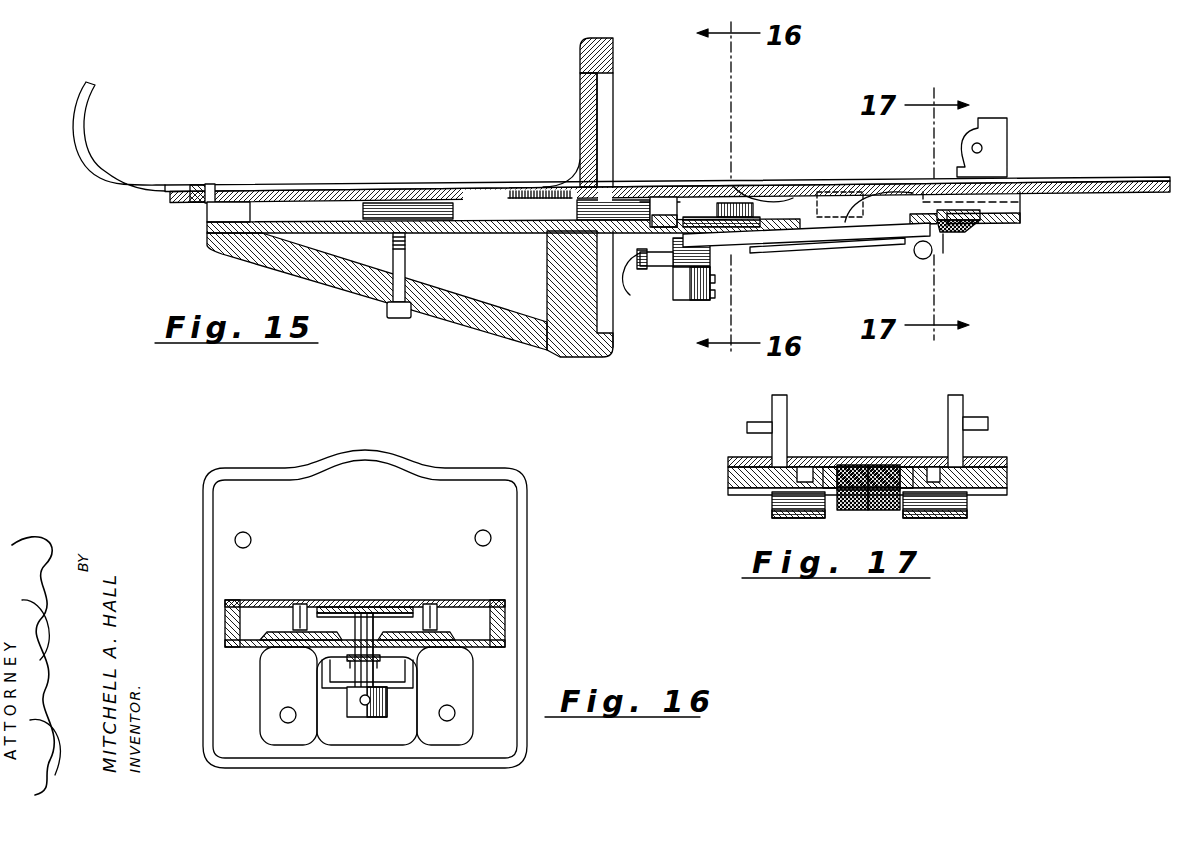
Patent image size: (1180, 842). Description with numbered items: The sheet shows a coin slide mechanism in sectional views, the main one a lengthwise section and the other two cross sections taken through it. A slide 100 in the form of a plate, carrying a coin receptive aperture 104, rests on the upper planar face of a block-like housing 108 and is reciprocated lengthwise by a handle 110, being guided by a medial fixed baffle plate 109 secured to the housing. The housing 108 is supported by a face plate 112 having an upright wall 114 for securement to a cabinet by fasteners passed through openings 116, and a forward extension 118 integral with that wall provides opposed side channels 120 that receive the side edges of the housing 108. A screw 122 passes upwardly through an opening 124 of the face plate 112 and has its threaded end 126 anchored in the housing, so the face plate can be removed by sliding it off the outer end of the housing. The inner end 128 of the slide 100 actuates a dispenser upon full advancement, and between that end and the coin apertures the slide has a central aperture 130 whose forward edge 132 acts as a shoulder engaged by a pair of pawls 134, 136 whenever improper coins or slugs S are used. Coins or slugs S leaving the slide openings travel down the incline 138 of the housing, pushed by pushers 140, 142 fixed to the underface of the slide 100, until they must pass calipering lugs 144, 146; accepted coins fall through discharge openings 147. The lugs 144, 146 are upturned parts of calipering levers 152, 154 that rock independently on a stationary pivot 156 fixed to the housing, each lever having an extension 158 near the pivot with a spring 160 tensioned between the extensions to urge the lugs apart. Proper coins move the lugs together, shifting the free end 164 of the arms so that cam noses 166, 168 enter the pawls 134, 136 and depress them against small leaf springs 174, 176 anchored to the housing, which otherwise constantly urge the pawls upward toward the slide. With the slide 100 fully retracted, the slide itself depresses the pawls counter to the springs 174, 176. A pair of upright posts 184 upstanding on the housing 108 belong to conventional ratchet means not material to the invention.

In FIG. 15, the slide 100 is at (306, 190).
In FIG. 16, the slide 100 is at (252, 600).
In FIG. 17, the slide 100 is at (1007, 459).
In FIG. 15, the coin receptive aperture 104 is at (468, 189).
In FIG. 15, the slug S is at (497, 189).
In FIG. 15, the housing 108 is at (527, 234).
In FIG. 16, the housing 108 is at (507, 625).
In FIG. 17, the housing 108 is at (1007, 474).
In FIG. 15, the baffle plate 109 is at (813, 192).
In FIG. 16, the baffle plate 109 is at (384, 606).
In FIG. 15, the handle 110 is at (91, 149).
In FIG. 15, the face plate 112 is at (519, 343).
In FIG. 16, the face plate 112 is at (528, 654).
In FIG. 15, the upright wall 114 is at (582, 99).
In FIG. 16, the upright wall 114 is at (508, 509).
In FIG. 16, the openings 116 is at (238, 538).
In FIG. 15, the forward extension 118 is at (362, 287).
In FIG. 15, the side channels 120 is at (250, 207).
In FIG. 16, the side channels 120 is at (227, 626).
In FIG. 15, the screw 122 is at (402, 281).
In FIG. 15, the opening 124 is at (386, 303).
In FIG. 15, the threaded end 126 is at (373, 234).
In FIG. 15, the inner end 128 is at (1166, 178).
In FIG. 15, the central aperture 130 is at (733, 186).
In FIG. 16, the central aperture 130 is at (340, 604).
In FIG. 15, the forward edge 132 is at (653, 191).
In FIG. 16, the forward edge 132 is at (361, 603).
In FIG. 17, the pawl 134 is at (862, 458).
In FIG. 15, the pawl 136 is at (926, 191).
In FIG. 17, the pawl 136 is at (881, 458).
In FIG. 15, the incline 138 is at (660, 215).
In FIG. 15, the pusher 140 is at (455, 208).
In FIG. 15, the pusher 142 is at (577, 206).
In FIG. 16, the pusher 142 is at (300, 603).
In FIG. 16, the calipering lug 144 is at (390, 650).
In FIG. 15, the calipering lug 146 is at (783, 185).
In FIG. 16, the calipering lug 146 is at (355, 627).
In FIG. 15, the discharge openings 147 is at (874, 238).
In FIG. 15, the calipering lever 152 is at (829, 238).
In FIG. 16, the calipering lever 152 is at (397, 665).
In FIG. 17, the calipering lever 152 is at (772, 516).
In FIG. 15, the calipering lever 154 is at (844, 244).
In FIG. 16, the calipering lever 154 is at (325, 673).
In FIG. 17, the calipering lever 154 is at (967, 516).
In FIG. 15, the pivot 156 is at (672, 301).
In FIG. 16, the pivot 156 is at (362, 701).
In FIG. 15, the extension 158 is at (642, 282).
In FIG. 15, the spring 160 is at (652, 267).
In FIG. 15, the free end 164 is at (957, 232).
In FIG. 17, the cam nose 166 is at (830, 498).
In FIG. 17, the cam nose 168 is at (917, 498).
In FIG. 15, the leaf spring 174 is at (1022, 200).
In FIG. 17, the leaf spring 174 is at (860, 511).
In FIG. 15, the leaf spring 176 is at (944, 240).
In FIG. 17, the leaf spring 176 is at (884, 511).
In FIG. 15, the upright posts 184 is at (993, 137).
In FIG. 17, the upright posts 184 is at (772, 406).